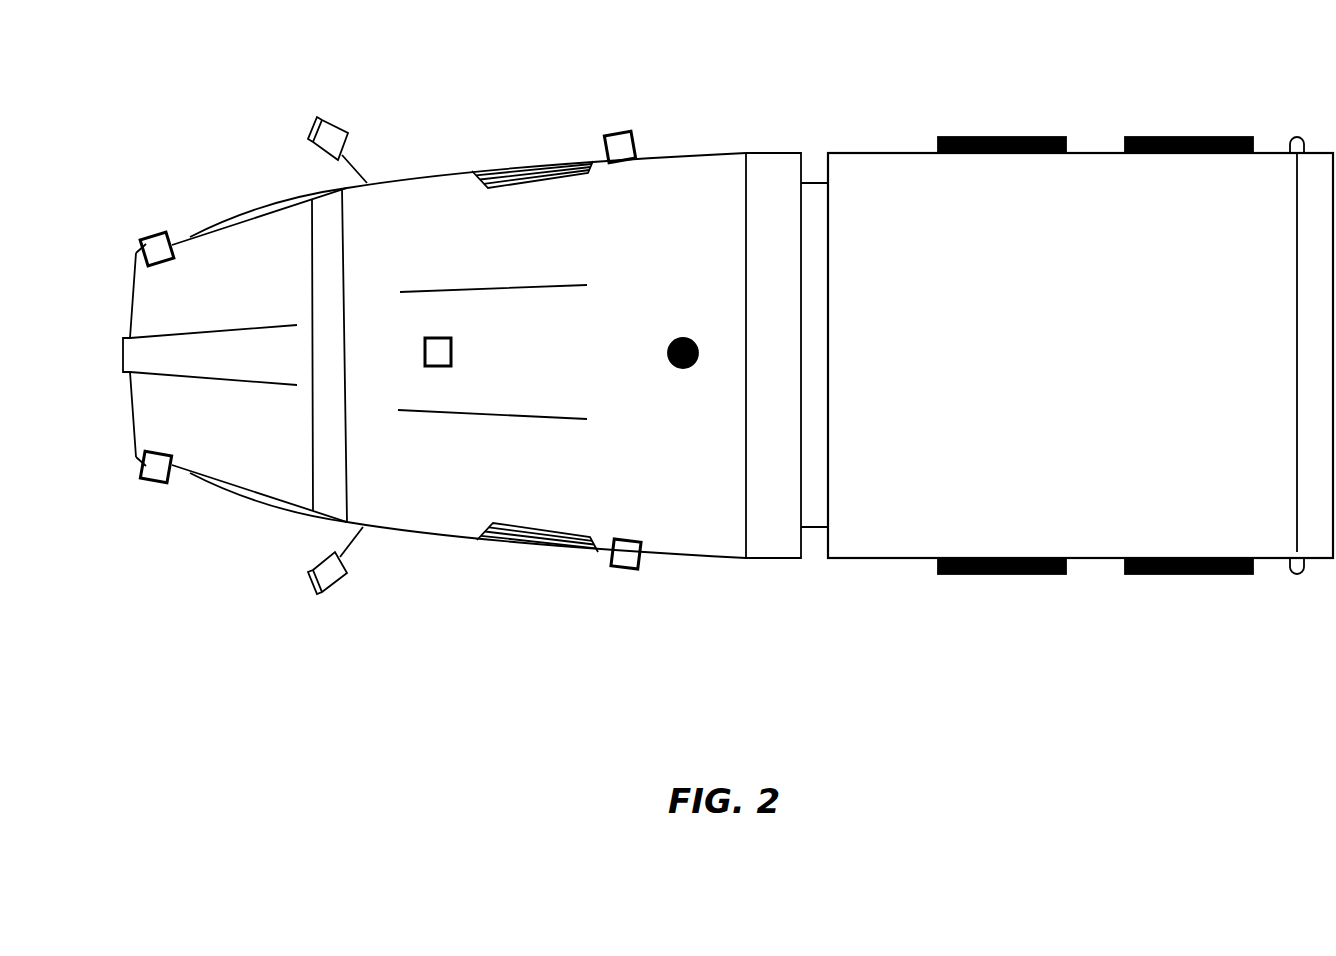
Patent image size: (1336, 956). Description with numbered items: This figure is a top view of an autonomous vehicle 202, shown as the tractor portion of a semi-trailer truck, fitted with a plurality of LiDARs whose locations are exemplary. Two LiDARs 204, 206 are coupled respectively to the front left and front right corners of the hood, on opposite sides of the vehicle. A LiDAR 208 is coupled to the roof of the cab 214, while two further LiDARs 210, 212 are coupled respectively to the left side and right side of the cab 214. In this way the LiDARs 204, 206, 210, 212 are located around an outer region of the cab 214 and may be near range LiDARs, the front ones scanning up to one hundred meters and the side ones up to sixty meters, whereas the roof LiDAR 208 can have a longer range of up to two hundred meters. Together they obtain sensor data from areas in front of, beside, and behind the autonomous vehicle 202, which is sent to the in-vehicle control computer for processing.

The autonomous vehicle 202 is at (700, 339).
The LiDAR 204 is at (143, 478).
The LiDAR 206 is at (143, 240).
The LiDAR 208 is at (426, 338).
The LiDAR 210 is at (618, 572).
The LiDAR 212 is at (612, 133).
The cab 214 is at (463, 493).